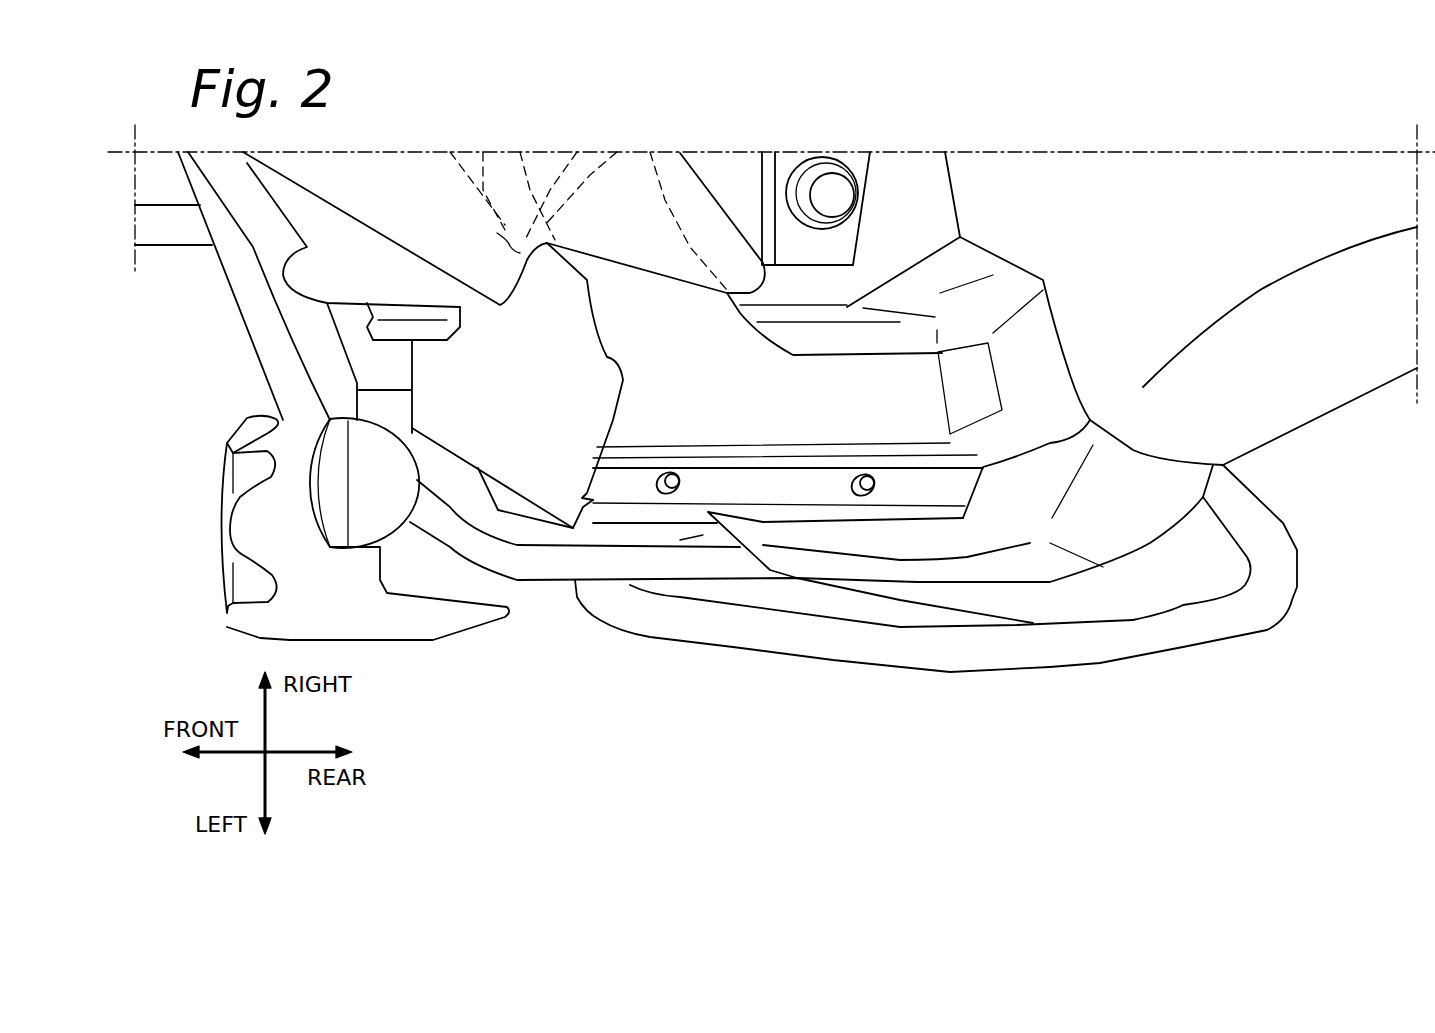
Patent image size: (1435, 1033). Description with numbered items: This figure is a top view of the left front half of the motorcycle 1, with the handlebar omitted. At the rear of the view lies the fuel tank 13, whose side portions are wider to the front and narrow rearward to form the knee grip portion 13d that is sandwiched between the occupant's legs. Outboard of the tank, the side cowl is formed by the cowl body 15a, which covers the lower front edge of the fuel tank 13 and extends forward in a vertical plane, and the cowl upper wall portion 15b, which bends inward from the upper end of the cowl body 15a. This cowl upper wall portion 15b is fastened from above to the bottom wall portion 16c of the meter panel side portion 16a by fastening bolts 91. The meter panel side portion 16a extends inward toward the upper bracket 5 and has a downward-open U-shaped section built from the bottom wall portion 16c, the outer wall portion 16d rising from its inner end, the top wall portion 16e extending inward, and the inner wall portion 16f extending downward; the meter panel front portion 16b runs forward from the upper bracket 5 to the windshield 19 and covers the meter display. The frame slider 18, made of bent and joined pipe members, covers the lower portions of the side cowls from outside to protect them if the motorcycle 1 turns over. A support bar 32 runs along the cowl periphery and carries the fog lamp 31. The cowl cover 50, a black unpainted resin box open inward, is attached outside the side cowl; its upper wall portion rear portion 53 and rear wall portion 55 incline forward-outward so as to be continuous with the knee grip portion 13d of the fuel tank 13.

The motorcycle 1 is at (1167, 683).
The upper bracket 5 is at (860, 237).
The fuel tank 13 is at (1303, 440).
The knee grip portion 13d is at (1322, 368).
The cowl body 15a is at (630, 513).
The cowl upper wall portion 15b is at (745, 545).
The meter panel side portion 16a is at (1067, 307).
The meter panel front portion 16b is at (651, 307).
The bottom wall portion 16c is at (793, 482).
The outer wall portion 16d is at (945, 480).
The top wall portion 16e is at (913, 393).
The inner wall portion 16f is at (940, 293).
The frame slider 18 is at (1280, 597).
The windshield 19 is at (426, 208).
The fog lamp 31 is at (243, 523).
The support bar 32 is at (250, 298).
The cowl cover 50 is at (1045, 595).
The upper wall portion rear portion 53 is at (1026, 510).
The rear wall portion 55 is at (1148, 512).
The fastening bolt 91 is at (870, 473).